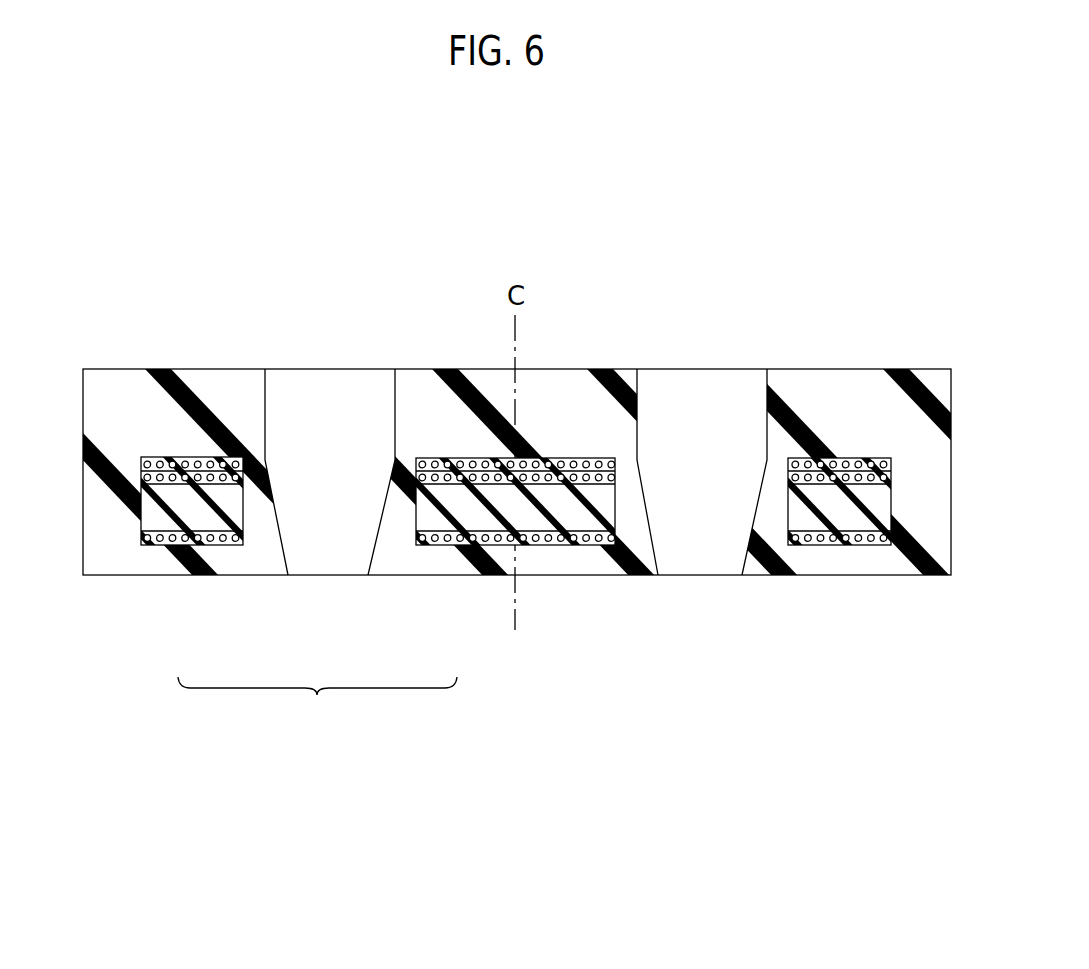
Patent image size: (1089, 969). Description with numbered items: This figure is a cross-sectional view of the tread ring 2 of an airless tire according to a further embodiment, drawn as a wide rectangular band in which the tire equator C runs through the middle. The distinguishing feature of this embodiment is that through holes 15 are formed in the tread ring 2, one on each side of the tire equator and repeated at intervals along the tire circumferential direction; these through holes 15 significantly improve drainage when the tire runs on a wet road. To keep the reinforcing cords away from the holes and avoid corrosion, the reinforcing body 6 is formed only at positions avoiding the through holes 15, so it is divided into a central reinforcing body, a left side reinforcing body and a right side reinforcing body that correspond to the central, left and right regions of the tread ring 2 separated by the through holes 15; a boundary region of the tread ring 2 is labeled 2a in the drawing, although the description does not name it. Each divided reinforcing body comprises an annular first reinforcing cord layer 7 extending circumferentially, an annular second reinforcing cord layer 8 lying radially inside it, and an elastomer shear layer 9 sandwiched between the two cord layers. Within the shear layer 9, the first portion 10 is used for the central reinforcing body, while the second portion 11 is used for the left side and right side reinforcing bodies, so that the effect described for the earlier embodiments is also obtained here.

The tread ring 2 is at (838, 263).
The boundary line 2a is at (417, 369).
The reinforcing body 6 is at (840, 409).
The first reinforcing cord layer 7 is at (566, 463).
The second reinforcing cord layer 8 is at (228, 549).
The shear layer 9 is at (317, 701).
The first portion 10 is at (449, 508).
The second portion 11 is at (188, 508).
The through holes 15 is at (324, 428).